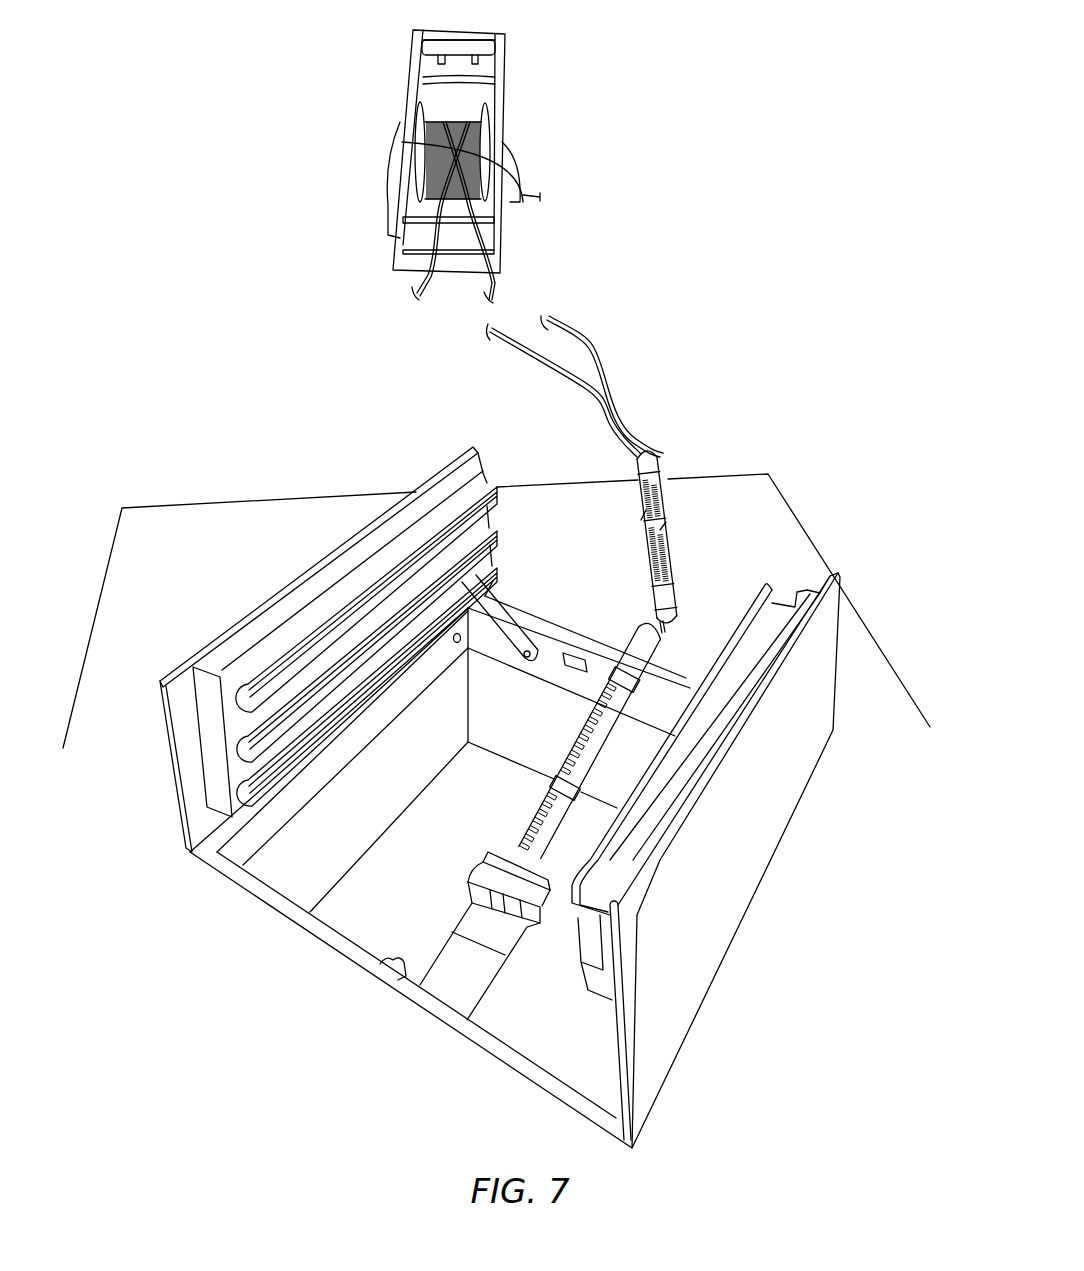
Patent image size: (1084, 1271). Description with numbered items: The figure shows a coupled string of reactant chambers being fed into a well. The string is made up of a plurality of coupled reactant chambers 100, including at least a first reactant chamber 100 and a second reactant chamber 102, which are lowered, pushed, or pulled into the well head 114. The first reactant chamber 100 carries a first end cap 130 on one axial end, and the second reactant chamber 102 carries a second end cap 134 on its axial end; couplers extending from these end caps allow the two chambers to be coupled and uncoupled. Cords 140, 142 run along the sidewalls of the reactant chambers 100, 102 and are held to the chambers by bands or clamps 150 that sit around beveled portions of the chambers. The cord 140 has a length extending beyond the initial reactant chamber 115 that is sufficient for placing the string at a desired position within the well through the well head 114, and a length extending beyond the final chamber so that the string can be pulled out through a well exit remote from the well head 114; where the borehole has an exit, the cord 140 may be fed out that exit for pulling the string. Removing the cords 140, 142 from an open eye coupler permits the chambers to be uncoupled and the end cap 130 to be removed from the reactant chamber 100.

The first reactant chamber 100 is at (557, 810).
The second reactant chamber 102 is at (664, 530).
The well head 114 is at (498, 872).
The initial reactant chamber 115 is at (540, 296).
The first end cap 130 is at (660, 635).
The second end cap 134 is at (648, 612).
The cord 140 is at (500, 280).
The cord 142 is at (418, 290).
The bands or clamps 150 is at (663, 507).